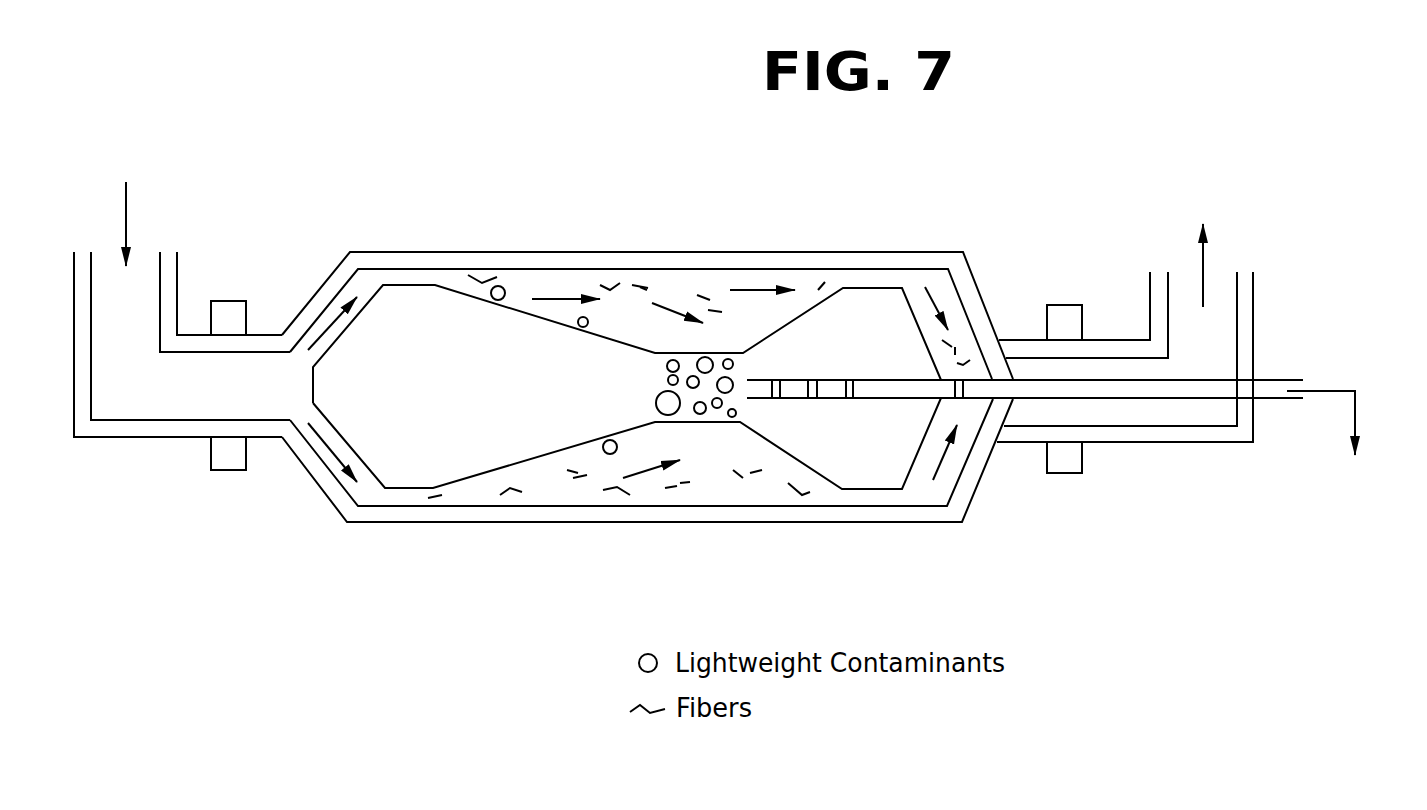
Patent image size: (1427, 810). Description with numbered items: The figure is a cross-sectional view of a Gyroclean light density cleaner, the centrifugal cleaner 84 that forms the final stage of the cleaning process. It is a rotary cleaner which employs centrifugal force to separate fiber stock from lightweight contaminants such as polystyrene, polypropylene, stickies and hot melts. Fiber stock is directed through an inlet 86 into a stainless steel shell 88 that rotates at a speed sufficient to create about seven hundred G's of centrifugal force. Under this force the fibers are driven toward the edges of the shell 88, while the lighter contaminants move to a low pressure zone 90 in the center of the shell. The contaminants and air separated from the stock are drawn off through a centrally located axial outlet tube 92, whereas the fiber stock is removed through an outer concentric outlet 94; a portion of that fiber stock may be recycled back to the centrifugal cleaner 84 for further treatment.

The centrifugal cleaner 84 is at (665, 237).
The inlet 86 is at (145, 258).
The stainless steel shell 88 is at (915, 515).
The low pressure zone 90 is at (713, 413).
The axial outlet tube 92 is at (983, 387).
The outer concentric outlet 94 is at (1222, 288).